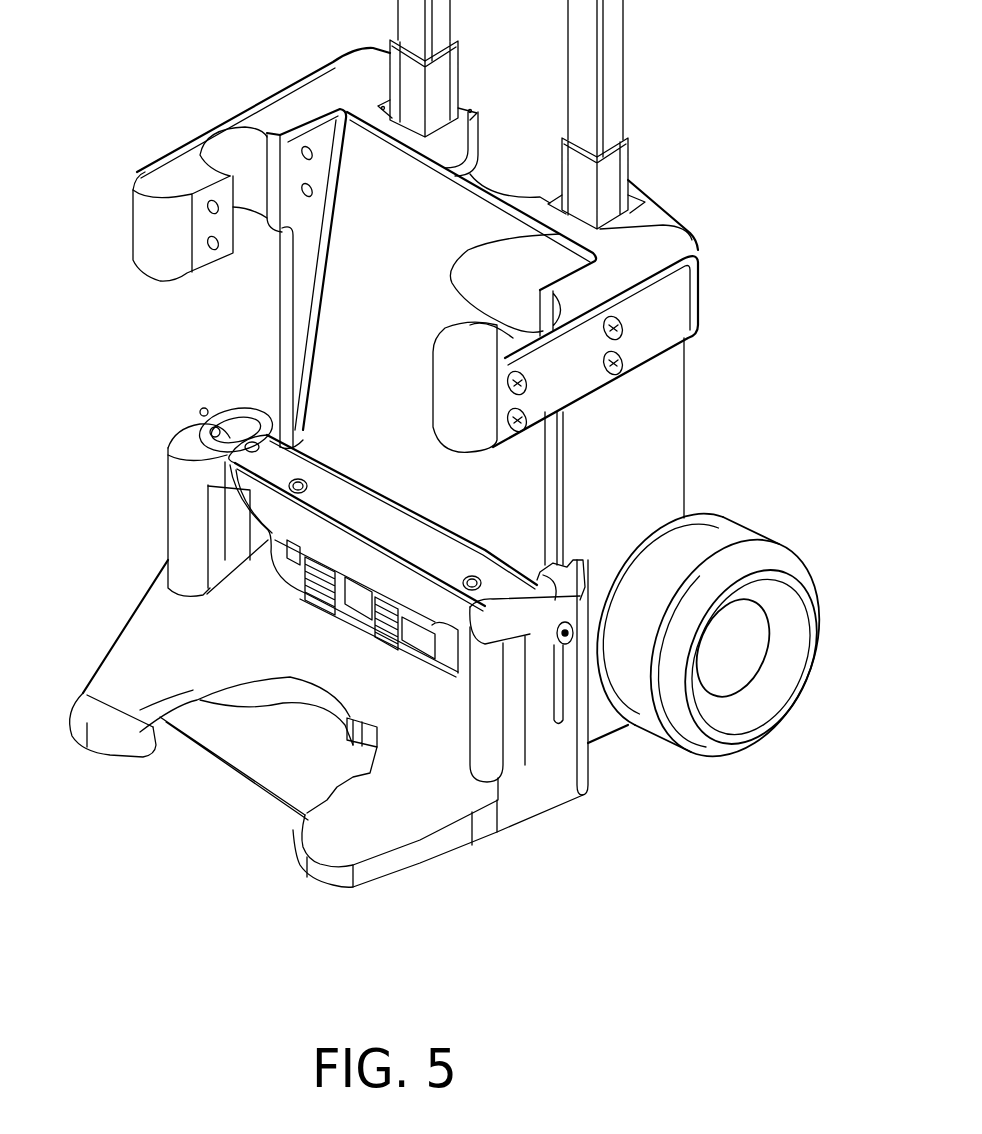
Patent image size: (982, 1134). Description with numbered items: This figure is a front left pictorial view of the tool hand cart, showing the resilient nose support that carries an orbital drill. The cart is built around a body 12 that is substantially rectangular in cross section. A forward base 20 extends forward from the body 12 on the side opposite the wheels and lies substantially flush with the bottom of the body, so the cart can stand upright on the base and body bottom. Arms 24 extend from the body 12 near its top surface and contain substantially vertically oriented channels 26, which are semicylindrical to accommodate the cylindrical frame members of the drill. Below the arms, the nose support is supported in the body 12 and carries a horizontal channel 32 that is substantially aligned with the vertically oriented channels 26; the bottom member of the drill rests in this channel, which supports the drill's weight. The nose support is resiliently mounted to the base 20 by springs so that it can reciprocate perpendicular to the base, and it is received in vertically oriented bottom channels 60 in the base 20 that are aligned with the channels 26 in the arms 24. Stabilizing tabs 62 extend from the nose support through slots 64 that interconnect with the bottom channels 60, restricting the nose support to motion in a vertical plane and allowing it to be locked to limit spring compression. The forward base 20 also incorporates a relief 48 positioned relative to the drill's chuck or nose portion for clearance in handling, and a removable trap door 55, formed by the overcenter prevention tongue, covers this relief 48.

The body 12 is at (630, 414).
The forward base 20 is at (427, 860).
The arms 24 is at (467, 397).
The vertically oriented channels 26 is at (683, 222).
The horizontal channel 32 is at (378, 515).
The relief 48 is at (202, 718).
The trap door 55 is at (242, 770).
The bottom channels 60 is at (247, 412).
The stabilizing tabs 62 is at (580, 612).
The slots 64 is at (558, 727).